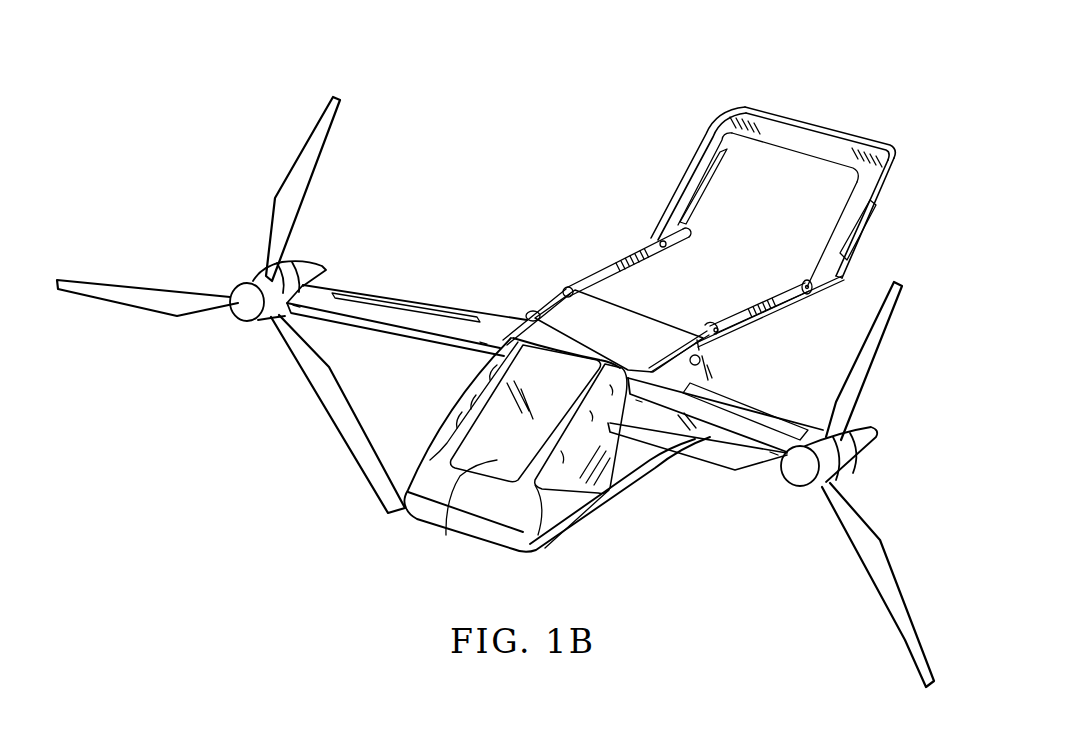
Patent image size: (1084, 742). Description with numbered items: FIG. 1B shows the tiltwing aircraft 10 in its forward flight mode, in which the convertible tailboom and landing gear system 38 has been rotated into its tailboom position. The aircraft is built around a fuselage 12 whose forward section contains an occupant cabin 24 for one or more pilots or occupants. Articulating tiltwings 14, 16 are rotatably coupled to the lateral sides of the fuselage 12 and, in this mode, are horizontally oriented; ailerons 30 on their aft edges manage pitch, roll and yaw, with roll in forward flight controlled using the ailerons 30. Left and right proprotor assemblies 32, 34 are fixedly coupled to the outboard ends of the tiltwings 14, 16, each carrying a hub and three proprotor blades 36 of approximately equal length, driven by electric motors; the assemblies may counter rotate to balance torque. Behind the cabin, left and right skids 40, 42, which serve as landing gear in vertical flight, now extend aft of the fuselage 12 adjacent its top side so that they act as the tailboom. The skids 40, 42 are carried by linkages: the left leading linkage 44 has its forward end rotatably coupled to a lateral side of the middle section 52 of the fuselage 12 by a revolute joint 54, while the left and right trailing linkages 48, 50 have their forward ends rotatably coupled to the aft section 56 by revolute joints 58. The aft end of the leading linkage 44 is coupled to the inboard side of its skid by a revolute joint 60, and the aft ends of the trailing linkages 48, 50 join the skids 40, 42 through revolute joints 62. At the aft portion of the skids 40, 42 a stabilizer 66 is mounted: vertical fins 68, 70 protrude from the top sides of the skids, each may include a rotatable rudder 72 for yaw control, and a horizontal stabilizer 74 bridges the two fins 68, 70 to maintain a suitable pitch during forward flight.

The tiltwing aircraft 10 is at (480, 128).
The fuselage 12 is at (485, 545).
The tiltwing 14 is at (703, 434).
The tiltwing 16 is at (413, 339).
The occupant cabin 24 is at (446, 535).
The ailerons 30 is at (407, 298).
The left proprotor assembly 32 is at (801, 487).
The right proprotor assembly 34 is at (243, 322).
The proprotor blades 36 is at (114, 283).
The convertible tailboom and landing gear system 38 is at (828, 307).
The left skid 40 is at (788, 313).
The right skid 42 is at (692, 240).
The left leading linkage 44 is at (667, 347).
The left trailing linkage 48 is at (783, 286).
The right trailing linkage 50 is at (633, 249).
The middle section 52 is at (527, 324).
The revolute joints 54 is at (647, 366).
The aft section 56 is at (614, 292).
The revolute joints 58 is at (568, 284).
The revolute joints 60 is at (724, 342).
The revolute joints 62 is at (807, 282).
The stabilizer 66 is at (786, 106).
The vertical fin 68 is at (887, 186).
The vertical fin 70 is at (683, 170).
The rudder 72 is at (866, 226).
The horizontal stabilizer 74 is at (827, 125).